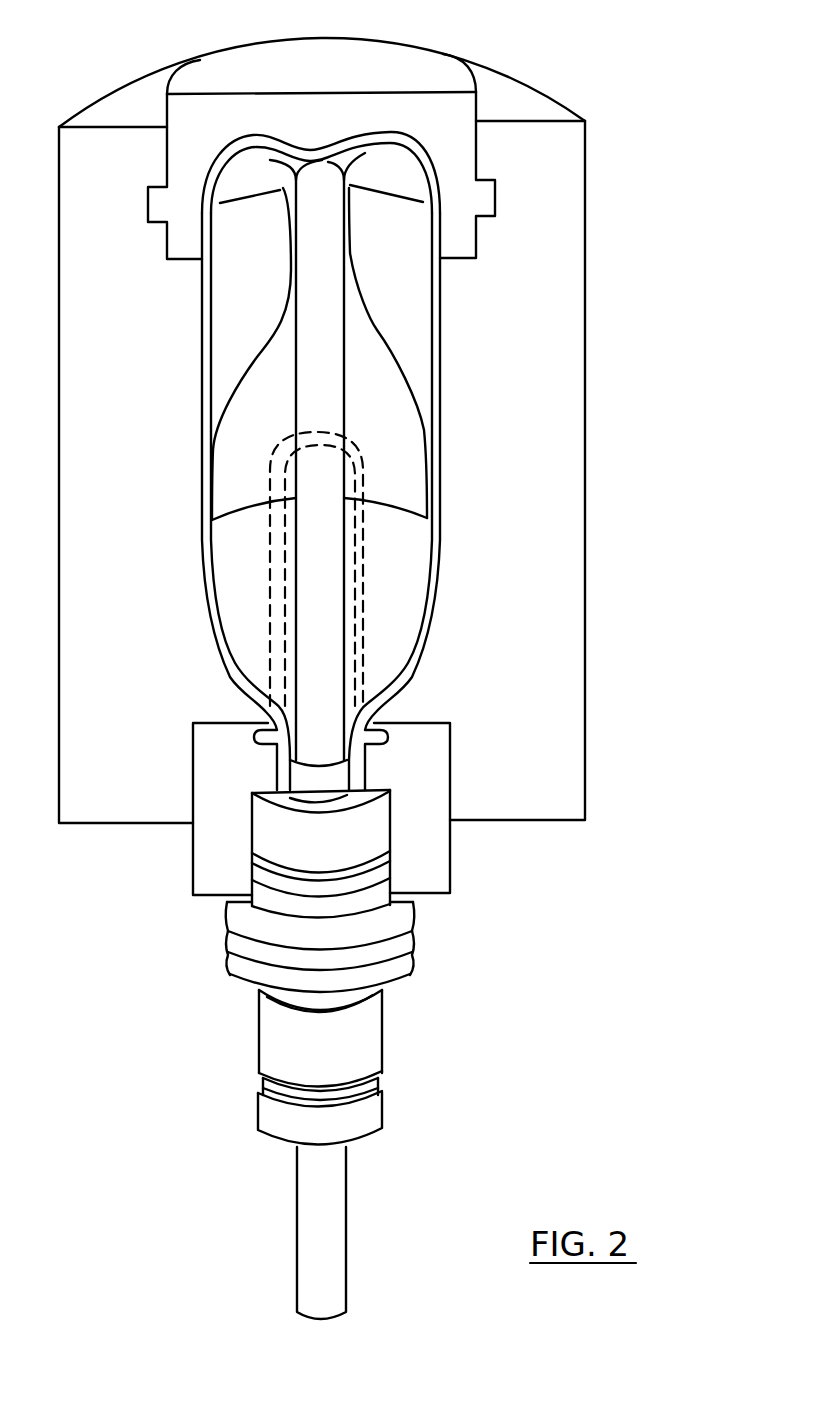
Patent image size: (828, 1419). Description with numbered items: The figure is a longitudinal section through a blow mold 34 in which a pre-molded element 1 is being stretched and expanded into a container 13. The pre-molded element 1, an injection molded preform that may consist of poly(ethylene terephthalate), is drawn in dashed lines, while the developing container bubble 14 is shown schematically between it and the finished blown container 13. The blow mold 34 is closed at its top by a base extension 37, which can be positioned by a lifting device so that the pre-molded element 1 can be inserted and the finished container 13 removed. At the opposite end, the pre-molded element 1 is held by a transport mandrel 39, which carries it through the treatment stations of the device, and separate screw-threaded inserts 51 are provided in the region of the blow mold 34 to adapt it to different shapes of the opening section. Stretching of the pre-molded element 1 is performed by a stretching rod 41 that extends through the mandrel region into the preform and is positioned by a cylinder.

The pre-molded element 1 is at (360, 605).
The container 13 is at (437, 365).
The container bubble 14 is at (372, 323).
The blow mold 34 is at (553, 492).
The base extension 37 is at (407, 63).
The transport mandrel 39 is at (400, 963).
The stretching rod 41 is at (303, 1205).
The screw-threaded insert 51 is at (430, 852).